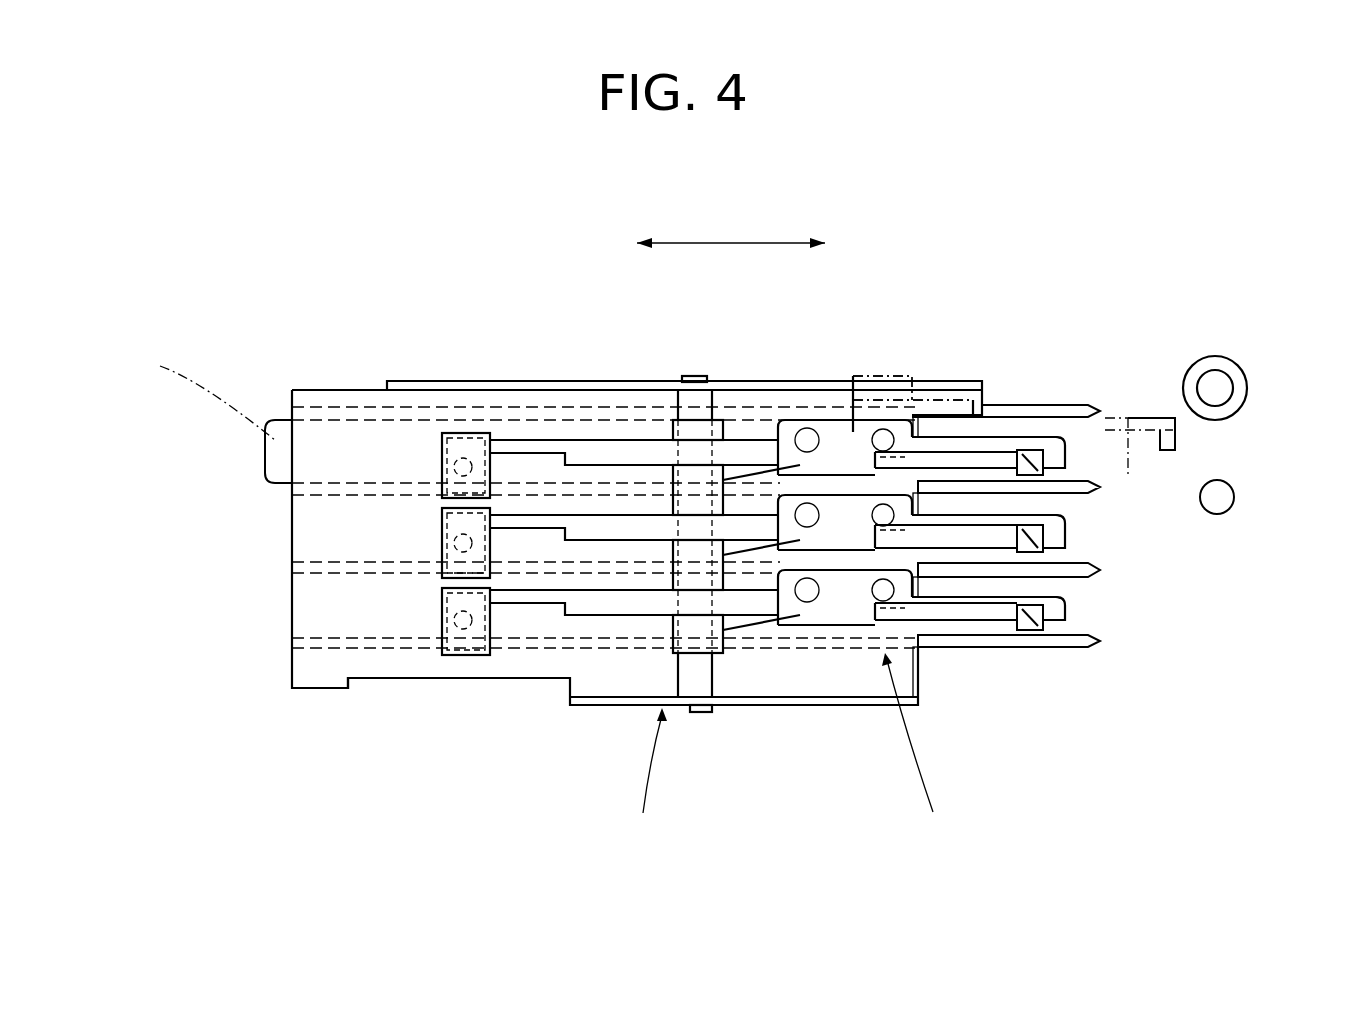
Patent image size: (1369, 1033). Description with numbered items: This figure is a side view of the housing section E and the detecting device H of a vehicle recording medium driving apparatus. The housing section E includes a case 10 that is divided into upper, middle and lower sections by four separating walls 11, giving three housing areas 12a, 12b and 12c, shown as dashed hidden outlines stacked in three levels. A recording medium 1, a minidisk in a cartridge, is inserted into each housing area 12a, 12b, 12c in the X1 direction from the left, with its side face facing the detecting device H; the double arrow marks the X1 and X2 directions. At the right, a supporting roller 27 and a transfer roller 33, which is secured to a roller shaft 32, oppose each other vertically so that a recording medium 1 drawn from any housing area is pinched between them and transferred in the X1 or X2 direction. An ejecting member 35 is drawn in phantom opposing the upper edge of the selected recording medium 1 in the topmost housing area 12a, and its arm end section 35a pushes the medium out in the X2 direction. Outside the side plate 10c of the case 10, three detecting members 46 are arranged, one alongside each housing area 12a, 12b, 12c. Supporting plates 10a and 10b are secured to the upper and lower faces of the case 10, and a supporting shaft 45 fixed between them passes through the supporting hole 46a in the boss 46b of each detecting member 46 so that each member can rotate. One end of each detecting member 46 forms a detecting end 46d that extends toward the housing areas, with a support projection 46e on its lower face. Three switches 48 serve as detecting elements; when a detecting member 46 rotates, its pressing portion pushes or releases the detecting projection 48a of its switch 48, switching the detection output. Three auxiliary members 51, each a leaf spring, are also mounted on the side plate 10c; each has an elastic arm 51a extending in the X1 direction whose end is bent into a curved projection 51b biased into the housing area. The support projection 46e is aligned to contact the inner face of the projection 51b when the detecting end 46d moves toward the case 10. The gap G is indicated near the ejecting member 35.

The recording medium 1 is at (207, 387).
The case 10 is at (315, 690).
The supporting plate 10a is at (522, 381).
The supporting plate 10b is at (803, 700).
The side plate 10c is at (440, 687).
The separating walls 11 is at (320, 407).
The housing area 12a is at (300, 450).
The housing area 12b is at (323, 537).
The housing area 12c is at (327, 615).
The supporting roller 27 is at (1227, 502).
The roller shaft 32 is at (1223, 388).
The transfer roller 33 is at (1228, 363).
The ejecting member 35 is at (1105, 417).
The arm end section 35a is at (1162, 417).
The supporting shaft 45 is at (720, 675).
The detecting member 46 is at (595, 440).
The supporting hole 46a is at (660, 445).
The boss 46b is at (735, 437).
The detecting end 46d is at (1035, 450).
The support projection 46e is at (1030, 452).
The switch 48 is at (437, 470).
The detecting projection 48a is at (465, 433).
The auxiliary member 51 is at (835, 482).
The elastic arm 51a is at (975, 480).
The projection 51b is at (1075, 467).
The housing section E is at (652, 782).
The gap G is at (1200, 438).
The detecting device H is at (917, 753).
The X1 direction X1 is at (754, 240).
The X2 direction X2 is at (621, 240).